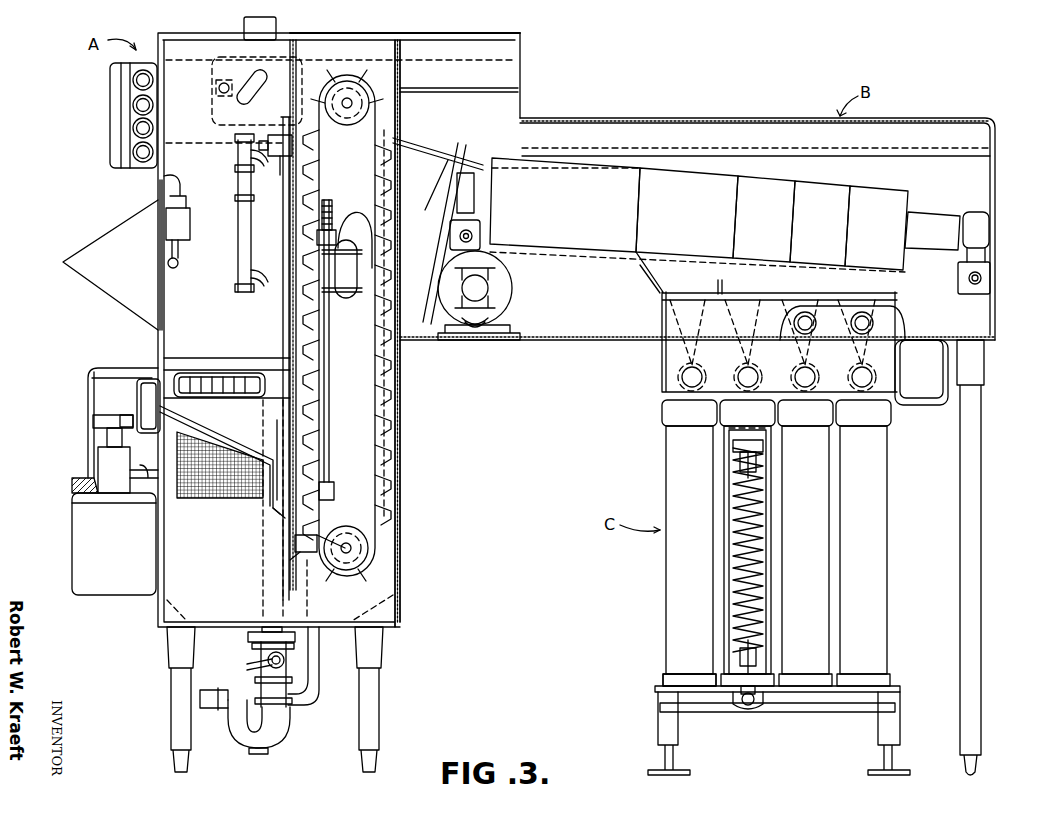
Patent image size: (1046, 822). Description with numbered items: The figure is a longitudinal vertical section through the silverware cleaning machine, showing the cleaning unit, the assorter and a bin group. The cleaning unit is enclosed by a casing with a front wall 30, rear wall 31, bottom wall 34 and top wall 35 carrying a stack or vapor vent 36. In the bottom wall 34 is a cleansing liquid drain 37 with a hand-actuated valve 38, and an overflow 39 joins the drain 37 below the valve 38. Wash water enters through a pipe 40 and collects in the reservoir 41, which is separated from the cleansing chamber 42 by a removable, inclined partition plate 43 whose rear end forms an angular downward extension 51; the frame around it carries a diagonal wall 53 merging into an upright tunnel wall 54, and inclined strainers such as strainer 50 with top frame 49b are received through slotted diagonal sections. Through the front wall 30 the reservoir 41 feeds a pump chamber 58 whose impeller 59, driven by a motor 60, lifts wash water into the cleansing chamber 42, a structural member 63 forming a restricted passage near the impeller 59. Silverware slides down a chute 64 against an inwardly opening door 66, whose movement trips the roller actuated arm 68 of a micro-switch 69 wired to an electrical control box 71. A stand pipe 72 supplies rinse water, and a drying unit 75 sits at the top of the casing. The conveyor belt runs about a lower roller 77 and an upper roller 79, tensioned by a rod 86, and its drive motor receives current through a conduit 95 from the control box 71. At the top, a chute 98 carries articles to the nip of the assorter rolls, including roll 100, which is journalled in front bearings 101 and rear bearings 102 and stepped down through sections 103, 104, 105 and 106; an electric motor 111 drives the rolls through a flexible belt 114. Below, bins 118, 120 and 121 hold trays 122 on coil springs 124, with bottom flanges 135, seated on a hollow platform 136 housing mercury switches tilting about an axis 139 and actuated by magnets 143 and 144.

The front wall 30 is at (158, 619).
The rear wall 31 is at (400, 593).
The bottom wall 34 is at (226, 630).
The top wall 35 is at (316, 40).
The stack or vapor vent 36 is at (244, 24).
The cleansing liquid drain 37 is at (310, 698).
The hand-actuated valve 38 is at (249, 666).
The overflow 39 is at (320, 654).
The pipe 40 is at (350, 304).
The reservoir 41 is at (234, 570).
The cleansing chamber 42 is at (232, 426).
The partition plate 43 is at (260, 447).
The top frame 49b is at (198, 372).
The strainer 50 is at (203, 488).
The angular downward extension 51 is at (269, 460).
The diagonal wall 53 is at (278, 515).
The upright tunnel wall 54 is at (303, 553).
The pump chamber 58 is at (88, 372).
The impeller 59 is at (97, 420).
The motor 60 is at (123, 552).
The structural member 63 is at (138, 401).
The chute 64 is at (111, 294).
The door 66 is at (164, 291).
The roller actuated arm 68 is at (179, 263).
The micro-switch 69 is at (184, 227).
The electrical control box 71 is at (121, 168).
The stand pipe 72 is at (238, 254).
The drying unit 75 is at (260, 90).
The lower roller 77 is at (350, 530).
The upper roller 79 is at (358, 92).
The rod 86 is at (328, 461).
The conduit 95 is at (222, 123).
The chute 98 is at (420, 145).
The assorter roll 100 is at (572, 235).
The front bearings 101 is at (470, 181).
The rear bearings 102 is at (989, 231).
The section 103 is at (694, 219).
The section 104 is at (776, 226).
The section 105 is at (833, 239).
The section 106 is at (890, 244).
The electric motor 111 is at (493, 291).
The flexible belt 114 is at (428, 256).
The bin 118 is at (705, 612).
The bin 120 is at (819, 576).
The bin 121 is at (878, 576).
The tray 122 is at (761, 422).
The coil spring 124 is at (770, 608).
The upstanding flange 135 is at (668, 678).
The platform 136 is at (823, 704).
The axis 139 is at (748, 708).
The magnet 143 is at (766, 667).
The magnet 144 is at (764, 466).